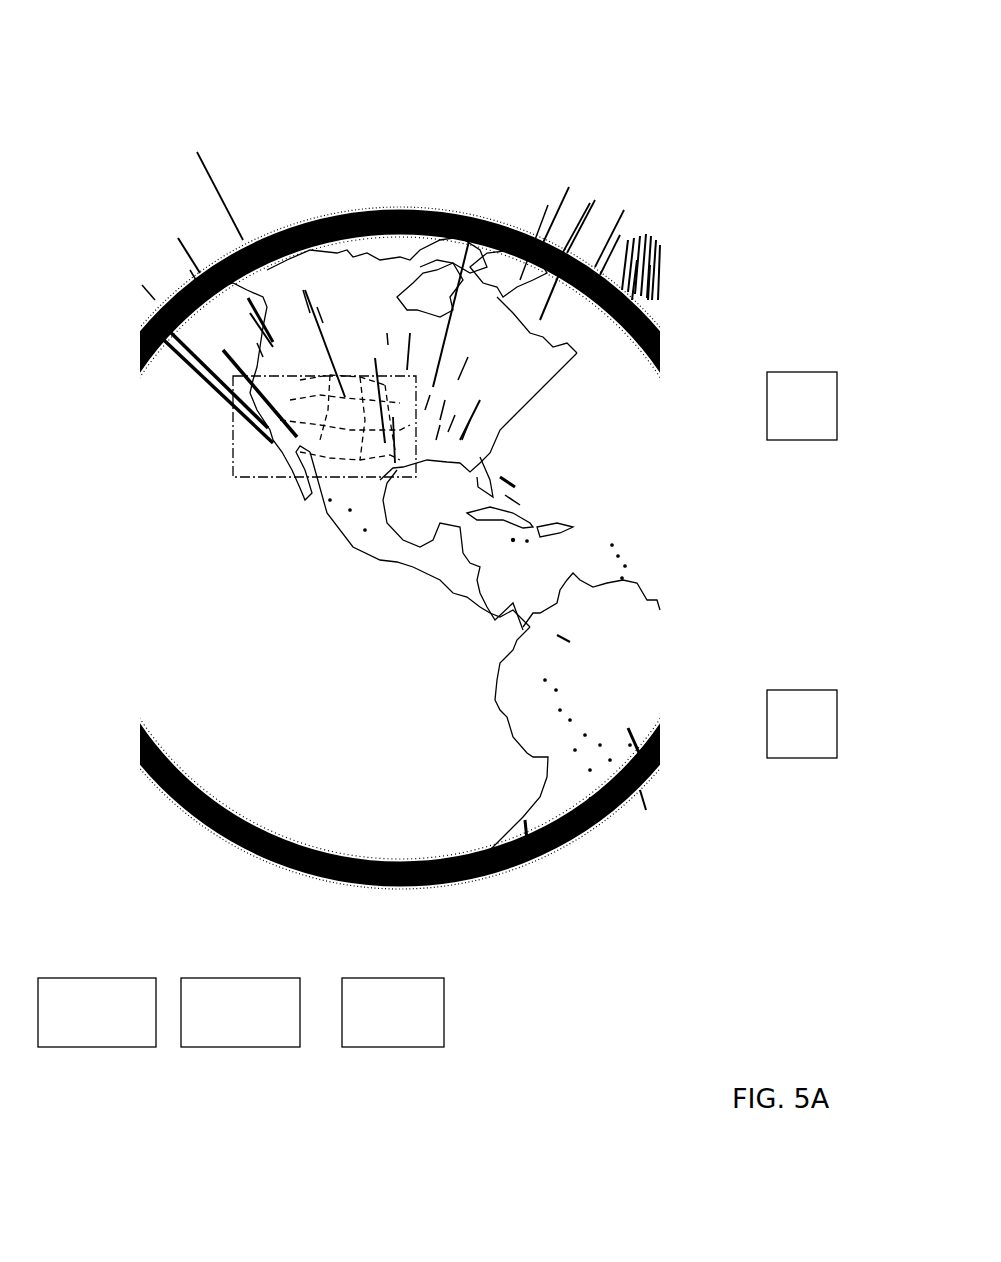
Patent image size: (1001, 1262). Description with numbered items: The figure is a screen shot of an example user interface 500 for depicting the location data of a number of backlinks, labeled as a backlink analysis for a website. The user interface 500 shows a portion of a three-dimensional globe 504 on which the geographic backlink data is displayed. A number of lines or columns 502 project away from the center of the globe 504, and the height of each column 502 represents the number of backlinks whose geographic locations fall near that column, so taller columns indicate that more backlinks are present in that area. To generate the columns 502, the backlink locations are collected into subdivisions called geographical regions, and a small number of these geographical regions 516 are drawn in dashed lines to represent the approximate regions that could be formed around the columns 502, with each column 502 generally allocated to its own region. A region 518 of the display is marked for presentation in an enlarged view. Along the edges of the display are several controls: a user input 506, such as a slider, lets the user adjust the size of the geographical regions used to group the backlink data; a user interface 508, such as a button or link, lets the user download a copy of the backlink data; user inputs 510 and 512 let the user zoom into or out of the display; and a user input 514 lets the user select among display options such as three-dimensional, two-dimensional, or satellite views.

The user interface 500 is at (668, 98).
The columns 502 is at (568, 197).
The globe 504 is at (400, 548).
The user input 506 is at (97, 1012).
The user interface 508 is at (240, 1012).
The user input 510 is at (802, 406).
The user input 512 is at (802, 724).
The user input 514 is at (393, 1012).
The geographical regions 516 is at (277, 443).
The region 518 is at (233, 423).